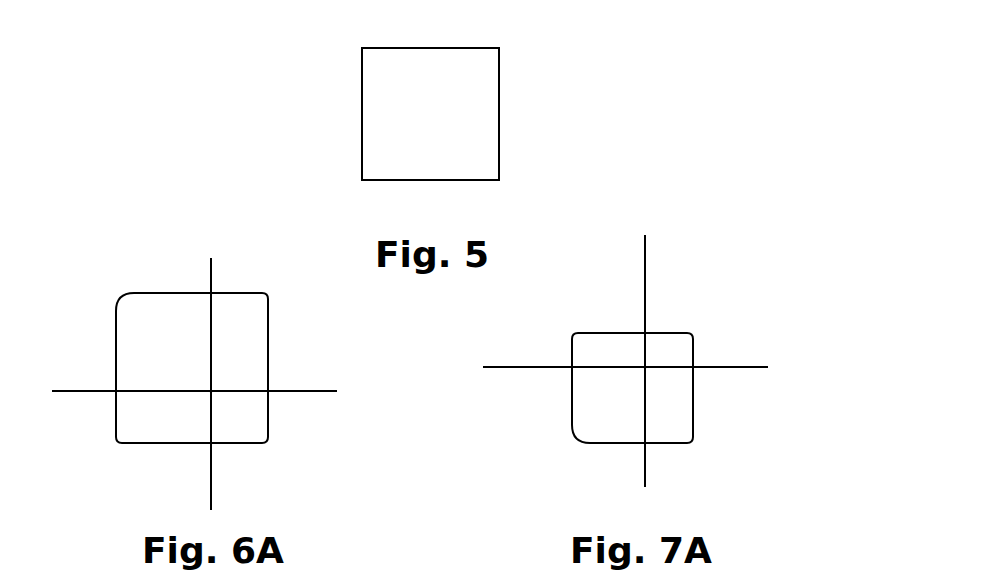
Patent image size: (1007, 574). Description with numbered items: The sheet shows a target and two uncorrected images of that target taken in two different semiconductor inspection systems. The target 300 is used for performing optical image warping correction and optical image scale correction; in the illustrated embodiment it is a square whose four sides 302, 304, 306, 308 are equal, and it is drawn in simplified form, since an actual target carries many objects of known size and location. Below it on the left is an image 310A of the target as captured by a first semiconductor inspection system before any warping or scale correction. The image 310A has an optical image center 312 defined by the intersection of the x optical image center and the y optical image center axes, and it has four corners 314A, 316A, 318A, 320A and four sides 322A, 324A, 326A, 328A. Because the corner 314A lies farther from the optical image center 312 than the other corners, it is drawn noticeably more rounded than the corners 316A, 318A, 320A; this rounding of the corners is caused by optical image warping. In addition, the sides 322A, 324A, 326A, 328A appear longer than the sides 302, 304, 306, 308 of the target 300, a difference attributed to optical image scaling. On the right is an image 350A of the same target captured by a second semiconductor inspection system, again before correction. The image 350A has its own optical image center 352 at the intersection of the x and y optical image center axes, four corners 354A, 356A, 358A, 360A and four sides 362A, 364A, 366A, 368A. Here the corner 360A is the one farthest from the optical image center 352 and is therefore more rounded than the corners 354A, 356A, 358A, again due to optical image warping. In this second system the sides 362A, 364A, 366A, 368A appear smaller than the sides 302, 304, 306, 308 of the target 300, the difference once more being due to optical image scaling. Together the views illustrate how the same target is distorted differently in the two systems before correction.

In FIG. 5, the target 300 is at (520, 51).
In FIG. 5, the side 302 is at (422, 48).
In FIG. 5, the side 304 is at (499, 112).
In FIG. 5, the side 306 is at (435, 180).
In FIG. 5, the side 308 is at (362, 117).
In FIG. 6A, the image 310A is at (285, 289).
In FIG. 6A, the optical image center 312 is at (212, 390).
In FIG. 6A, the corner 314A is at (130, 293).
In FIG. 6A, the corner 316A is at (267, 293).
In FIG. 6A, the corner 318A is at (268, 443).
In FIG. 6A, the corner 320A is at (116, 443).
In FIG. 6A, the side 322A is at (178, 293).
In FIG. 6A, the side 324A is at (268, 357).
In FIG. 6A, the side 326A is at (188, 445).
In FIG. 6A, the side 328A is at (116, 362).
In FIG. 7A, the image 350A is at (709, 249).
In FIG. 7A, the optical image center 352 is at (646, 368).
In FIG. 7A, the corner 354A is at (572, 333).
In FIG. 7A, the corner 356A is at (692, 333).
In FIG. 7A, the corner 358A is at (693, 445).
In FIG. 7A, the corner 360A is at (572, 432).
In FIG. 7A, the side 362A is at (602, 333).
In FIG. 7A, the side 364A is at (693, 400).
In FIG. 7A, the side 366A is at (618, 445).
In FIG. 7A, the side 368A is at (572, 393).